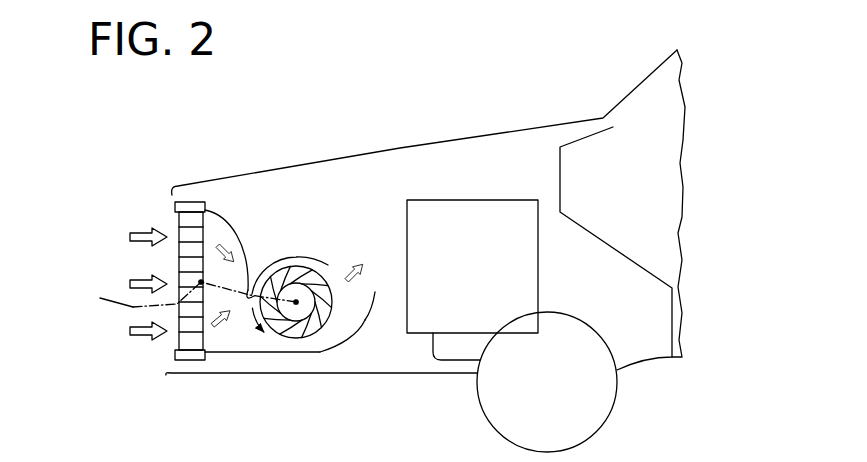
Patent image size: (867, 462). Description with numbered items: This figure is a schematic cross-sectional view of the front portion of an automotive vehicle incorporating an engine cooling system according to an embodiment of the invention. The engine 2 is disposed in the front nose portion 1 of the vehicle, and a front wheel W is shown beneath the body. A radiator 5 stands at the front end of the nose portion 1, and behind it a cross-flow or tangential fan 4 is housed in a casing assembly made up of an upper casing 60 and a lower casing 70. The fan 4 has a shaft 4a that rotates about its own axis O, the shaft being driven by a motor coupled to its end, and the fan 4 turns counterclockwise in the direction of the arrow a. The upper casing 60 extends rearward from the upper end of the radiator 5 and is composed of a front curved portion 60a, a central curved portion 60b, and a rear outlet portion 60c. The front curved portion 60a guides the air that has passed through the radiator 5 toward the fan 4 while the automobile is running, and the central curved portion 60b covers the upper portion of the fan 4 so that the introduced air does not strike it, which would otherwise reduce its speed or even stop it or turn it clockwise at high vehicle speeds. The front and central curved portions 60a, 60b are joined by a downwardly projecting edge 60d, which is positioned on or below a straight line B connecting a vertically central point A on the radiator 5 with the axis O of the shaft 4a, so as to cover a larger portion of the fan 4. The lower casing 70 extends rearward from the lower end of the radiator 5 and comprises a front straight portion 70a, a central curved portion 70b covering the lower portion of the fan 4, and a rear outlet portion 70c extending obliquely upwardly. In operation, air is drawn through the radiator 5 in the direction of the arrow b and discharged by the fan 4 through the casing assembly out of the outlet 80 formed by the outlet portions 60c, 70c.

The front nose portion 1 is at (453, 127).
The engine 2 is at (467, 213).
The radiator 5 is at (180, 258).
The upper casing 60 is at (332, 191).
The front curved portion 60a is at (223, 212).
The central curved portion 60b is at (301, 259).
The rear outlet portion 60c is at (400, 224).
The downwardly projecting edge 60d is at (257, 263).
The lower casing 70 is at (317, 367).
The front straight portion 70a is at (227, 353).
The central curved portion 70b is at (360, 333).
The rear outlet portion 70c is at (378, 293).
The outlet 80 is at (362, 287).
The cross-flow fan 4 is at (307, 355).
The shaft 4a is at (303, 316).
The axis O is at (296, 304).
The front wheel W is at (595, 408).
The vertically central point A is at (201, 282).
The straight line B is at (187, 296).
The direction of rotation arrow a is at (251, 327).
The air flow direction arrow b is at (218, 246).
The clearance c is at (229, 207).